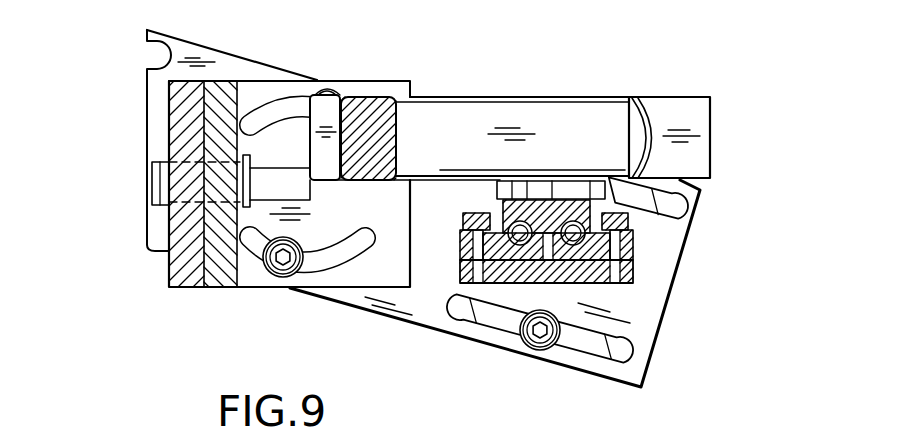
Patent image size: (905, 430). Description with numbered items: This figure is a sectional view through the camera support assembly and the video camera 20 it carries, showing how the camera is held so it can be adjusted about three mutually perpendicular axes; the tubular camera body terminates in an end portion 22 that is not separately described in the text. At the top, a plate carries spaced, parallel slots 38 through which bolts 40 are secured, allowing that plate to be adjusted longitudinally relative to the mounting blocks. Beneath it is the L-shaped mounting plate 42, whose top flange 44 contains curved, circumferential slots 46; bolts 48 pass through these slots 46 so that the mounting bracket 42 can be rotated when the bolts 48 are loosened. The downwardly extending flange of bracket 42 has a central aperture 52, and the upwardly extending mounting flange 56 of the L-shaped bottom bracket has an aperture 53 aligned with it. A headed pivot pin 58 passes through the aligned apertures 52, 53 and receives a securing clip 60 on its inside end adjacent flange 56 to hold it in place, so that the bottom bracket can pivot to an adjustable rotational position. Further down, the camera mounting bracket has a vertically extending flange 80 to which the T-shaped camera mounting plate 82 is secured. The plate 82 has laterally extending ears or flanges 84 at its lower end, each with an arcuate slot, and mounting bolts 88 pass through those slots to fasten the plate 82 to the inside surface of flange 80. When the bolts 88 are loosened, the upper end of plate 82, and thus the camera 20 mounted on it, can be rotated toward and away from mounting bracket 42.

The video camera 20 is at (488, 97).
The end cap 22 is at (681, 106).
The slots 38 is at (622, 345).
The bolts 40 is at (540, 343).
The mounting plate 42 is at (168, 104).
The top flange 44 is at (250, 282).
The curved circumferential slots 46 is at (293, 100).
The bolts 48 is at (282, 290).
The central aperture 52 is at (165, 141).
The aperture 53 is at (240, 152).
The mounting flange 56 is at (213, 290).
The headed pivot pin 58 is at (160, 192).
The securing clip 60 is at (190, 250).
The vertically extending flange 80 is at (512, 284).
The camera mounting plate 82 is at (553, 185).
The flanges 84 is at (462, 262).
The mounting bolts 88 is at (466, 213).